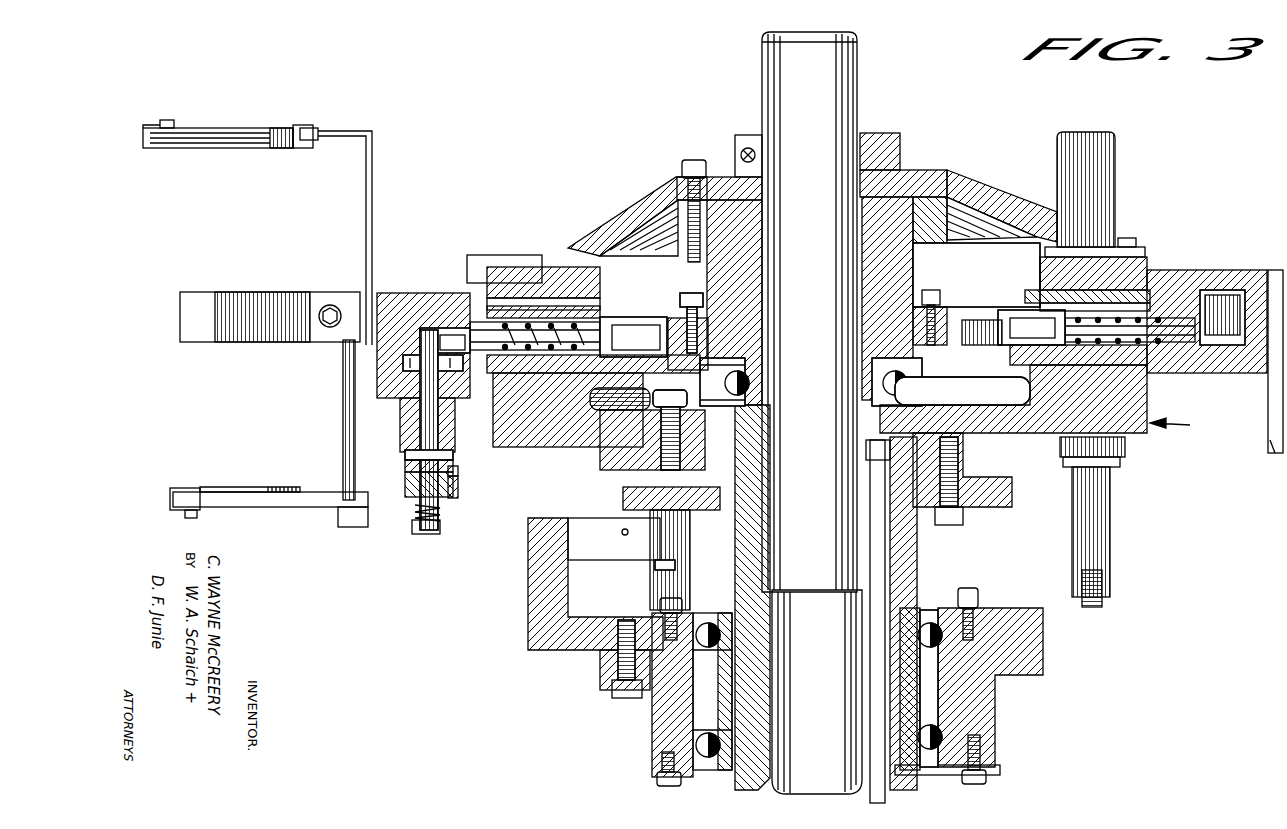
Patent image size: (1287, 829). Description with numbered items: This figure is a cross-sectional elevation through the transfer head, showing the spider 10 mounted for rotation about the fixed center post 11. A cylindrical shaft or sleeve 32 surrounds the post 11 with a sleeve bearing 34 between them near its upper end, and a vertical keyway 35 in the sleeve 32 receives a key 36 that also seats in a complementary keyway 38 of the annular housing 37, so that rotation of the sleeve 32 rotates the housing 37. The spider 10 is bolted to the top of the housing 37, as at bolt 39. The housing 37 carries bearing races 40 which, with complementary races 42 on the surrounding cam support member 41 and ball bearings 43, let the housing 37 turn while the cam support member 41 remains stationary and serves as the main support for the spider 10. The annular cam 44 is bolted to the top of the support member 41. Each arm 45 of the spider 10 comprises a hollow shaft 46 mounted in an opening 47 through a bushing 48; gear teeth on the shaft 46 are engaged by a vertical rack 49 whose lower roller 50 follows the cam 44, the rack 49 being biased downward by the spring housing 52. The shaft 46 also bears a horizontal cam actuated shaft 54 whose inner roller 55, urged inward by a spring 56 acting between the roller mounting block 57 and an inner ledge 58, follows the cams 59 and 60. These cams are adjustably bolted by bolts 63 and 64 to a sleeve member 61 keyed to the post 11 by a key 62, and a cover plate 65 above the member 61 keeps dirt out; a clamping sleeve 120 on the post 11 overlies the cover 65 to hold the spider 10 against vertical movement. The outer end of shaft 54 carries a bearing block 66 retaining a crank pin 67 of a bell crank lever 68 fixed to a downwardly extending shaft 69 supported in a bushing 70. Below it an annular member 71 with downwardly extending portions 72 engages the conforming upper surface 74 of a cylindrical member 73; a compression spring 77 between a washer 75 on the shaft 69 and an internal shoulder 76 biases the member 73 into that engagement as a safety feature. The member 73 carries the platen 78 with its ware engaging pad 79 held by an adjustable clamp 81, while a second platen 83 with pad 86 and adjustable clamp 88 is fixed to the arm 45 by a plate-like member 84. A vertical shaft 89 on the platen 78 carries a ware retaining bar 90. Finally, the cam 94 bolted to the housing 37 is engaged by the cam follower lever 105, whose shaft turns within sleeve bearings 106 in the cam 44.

The spider 10 is at (1172, 425).
The center post 11 is at (770, 47).
The cylindrical shaft or sleeve 32 is at (757, 778).
The sleeve bearing 34 is at (885, 566).
The keyway 35 is at (880, 537).
The key 36 is at (896, 758).
The annular housing 37 is at (910, 578).
The keyway 38 is at (916, 611).
The bolt 39 is at (660, 452).
The bearing races 40 is at (925, 658).
The cam support member 41 is at (1027, 672).
The bearing races 42 is at (942, 643).
The ball bearings 43 is at (942, 637).
The annular cam 44 is at (527, 578).
The arms 45 is at (395, 281).
The hollow shaft 46 is at (1148, 388).
The opening 47 is at (1120, 295).
The bushing 48 is at (1140, 303).
The rack 49 is at (1105, 541).
The roller 50 is at (1102, 601).
The spring housing 52 is at (1105, 152).
The horizontal cam actuated shaft 54 is at (518, 327).
The roller 55 is at (647, 333).
The spring 56 is at (503, 313).
The roller mounting block 57 is at (628, 322).
The inner ledge 58 is at (505, 375).
The cam 59 is at (975, 342).
The cam 60 is at (678, 347).
The sleeve member 61 is at (914, 258).
The key 62 is at (905, 190).
The bolt 63 is at (932, 298).
The bolt 64 is at (690, 290).
The cover plate 65 is at (960, 205).
The bearing block 66 is at (427, 338).
The crank pin 67 is at (442, 343).
The bell crank lever 68 is at (420, 362).
The shaft 69 is at (423, 418).
The bushing 70 is at (417, 437).
The annular member 71 is at (407, 453).
The extending portions 72 is at (407, 465).
The cylindrical member 73 is at (403, 483).
The upper surface 74 is at (457, 472).
The washer 75 is at (422, 533).
The internal shoulder 76 is at (463, 478).
The compression spring 77 is at (447, 518).
The platen 78 is at (322, 500).
The ware engaging pad 79 is at (255, 490).
The adjustable clamp 81 is at (190, 505).
The second platen 83 is at (340, 132).
The plate-like member 84 is at (372, 180).
The ware engaging pad 86 is at (202, 143).
The adjustable clamp 88 is at (143, 128).
The vertical shaft 89 is at (345, 422).
The ware retaining bar 90 is at (207, 300).
The cam 94 is at (1005, 497).
The cam follower lever 105 is at (670, 528).
The sleeve bearings 106 is at (690, 508).
The clamping sleeve 120 is at (885, 135).